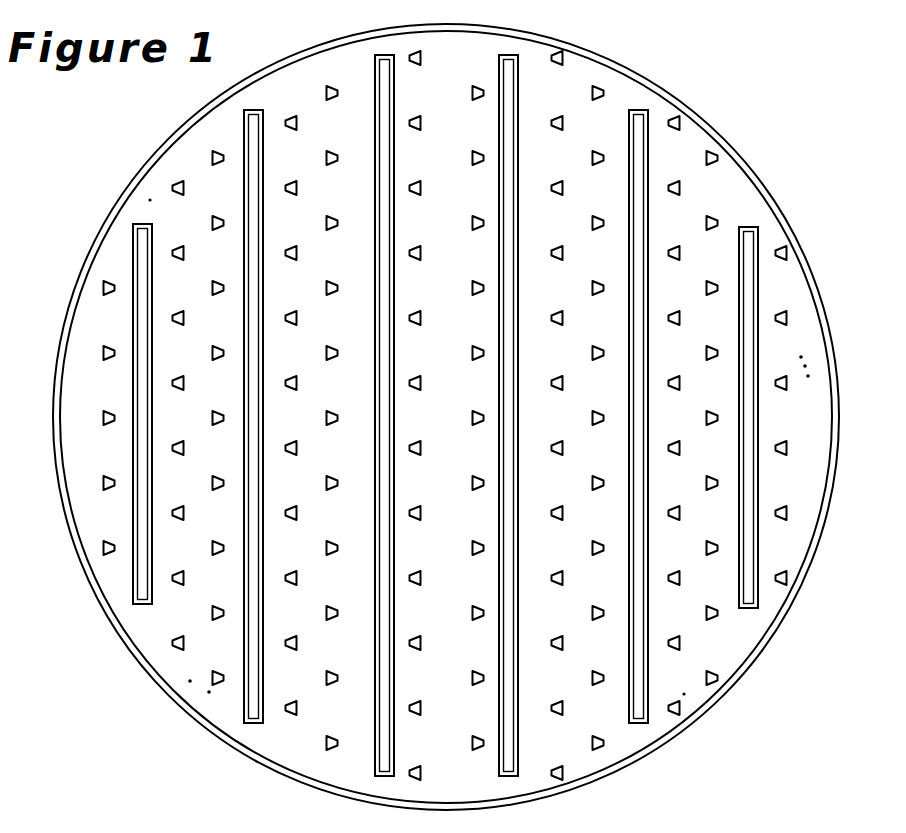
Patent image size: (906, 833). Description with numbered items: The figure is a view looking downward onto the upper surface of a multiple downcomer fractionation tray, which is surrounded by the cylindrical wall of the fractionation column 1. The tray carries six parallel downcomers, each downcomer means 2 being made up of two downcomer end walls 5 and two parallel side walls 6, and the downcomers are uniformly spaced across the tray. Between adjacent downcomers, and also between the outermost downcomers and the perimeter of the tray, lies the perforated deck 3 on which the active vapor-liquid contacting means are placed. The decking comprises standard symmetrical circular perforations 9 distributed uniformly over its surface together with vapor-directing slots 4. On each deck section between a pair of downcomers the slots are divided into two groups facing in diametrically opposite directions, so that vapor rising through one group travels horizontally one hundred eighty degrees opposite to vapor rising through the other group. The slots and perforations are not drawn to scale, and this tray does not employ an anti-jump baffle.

The fractionation column 1 is at (733, 145).
The downcomer means 2 is at (758, 240).
The deck 3 is at (150, 197).
The vapor-directing slots 4 is at (331, 228).
The downcomer end walls 5 is at (641, 110).
The parallel side walls 6 is at (500, 203).
The symmetrical perforations 9 is at (207, 694).